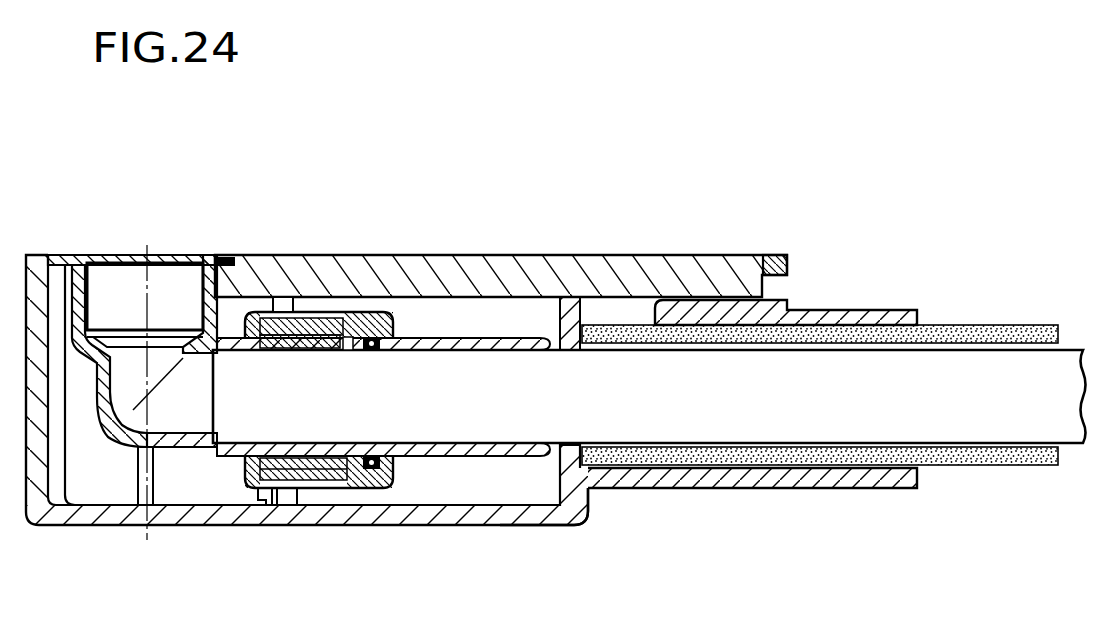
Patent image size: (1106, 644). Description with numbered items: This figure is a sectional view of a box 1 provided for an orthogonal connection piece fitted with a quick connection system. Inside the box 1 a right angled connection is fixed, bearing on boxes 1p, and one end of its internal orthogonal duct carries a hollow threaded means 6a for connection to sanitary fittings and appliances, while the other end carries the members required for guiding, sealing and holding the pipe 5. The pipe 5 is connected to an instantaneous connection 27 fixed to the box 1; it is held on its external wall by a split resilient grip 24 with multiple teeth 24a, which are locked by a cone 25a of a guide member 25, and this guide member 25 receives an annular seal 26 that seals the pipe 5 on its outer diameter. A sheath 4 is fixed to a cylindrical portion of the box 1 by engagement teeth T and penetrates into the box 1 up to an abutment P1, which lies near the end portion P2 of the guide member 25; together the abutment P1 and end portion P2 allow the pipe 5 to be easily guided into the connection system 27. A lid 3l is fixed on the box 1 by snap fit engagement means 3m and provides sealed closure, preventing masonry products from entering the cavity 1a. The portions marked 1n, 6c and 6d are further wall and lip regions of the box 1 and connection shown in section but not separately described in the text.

The box 1 is at (843, 489).
The cavity 1a is at (503, 490).
The tube portion of housing 1n is at (836, 310).
The boxes 1p is at (138, 506).
The lid 3l is at (556, 258).
The snap fit engagement means 3m is at (228, 258).
The sheath 4 is at (792, 489).
The pipe 5 is at (670, 428).
The hollow threaded means 6a is at (177, 266).
The cylindrical wall portion 6c is at (192, 448).
The lip portion 6d is at (148, 413).
The split resilient grip 24 is at (326, 443).
The teeth 24a is at (264, 500).
The guide member 25 is at (368, 489).
The cone 25a is at (298, 296).
The annular seal 26 is at (394, 462).
The instantaneous connection 27 is at (340, 340).
The engagement teeth T is at (660, 468).
The abutment P1 is at (586, 490).
The end portion P2 is at (541, 507).